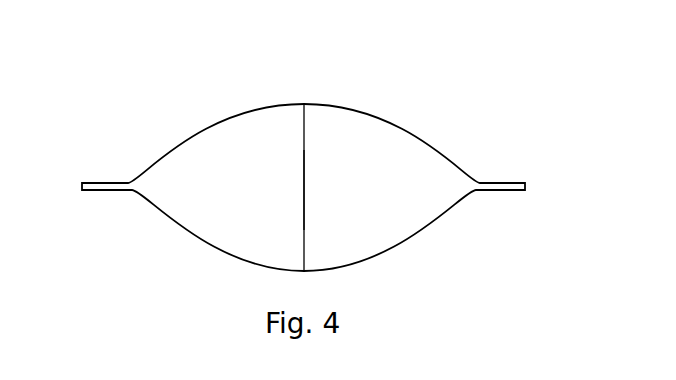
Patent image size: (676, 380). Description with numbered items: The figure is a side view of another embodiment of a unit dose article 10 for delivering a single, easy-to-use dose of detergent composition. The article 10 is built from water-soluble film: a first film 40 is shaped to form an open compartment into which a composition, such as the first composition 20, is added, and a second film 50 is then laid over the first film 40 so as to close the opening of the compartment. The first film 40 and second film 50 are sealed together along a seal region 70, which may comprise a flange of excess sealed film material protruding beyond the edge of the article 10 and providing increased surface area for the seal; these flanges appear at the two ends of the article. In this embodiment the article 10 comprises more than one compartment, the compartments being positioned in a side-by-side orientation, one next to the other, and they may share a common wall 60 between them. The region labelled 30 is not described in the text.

The unit dose article 10 is at (484, 68).
The first composition 20 is at (243, 177).
The second (upper right) panel 30 is at (377, 170).
The first film 40 is at (395, 255).
The second film 50 is at (323, 104).
The common wall 60 is at (303, 180).
The seal region 70 is at (110, 183).